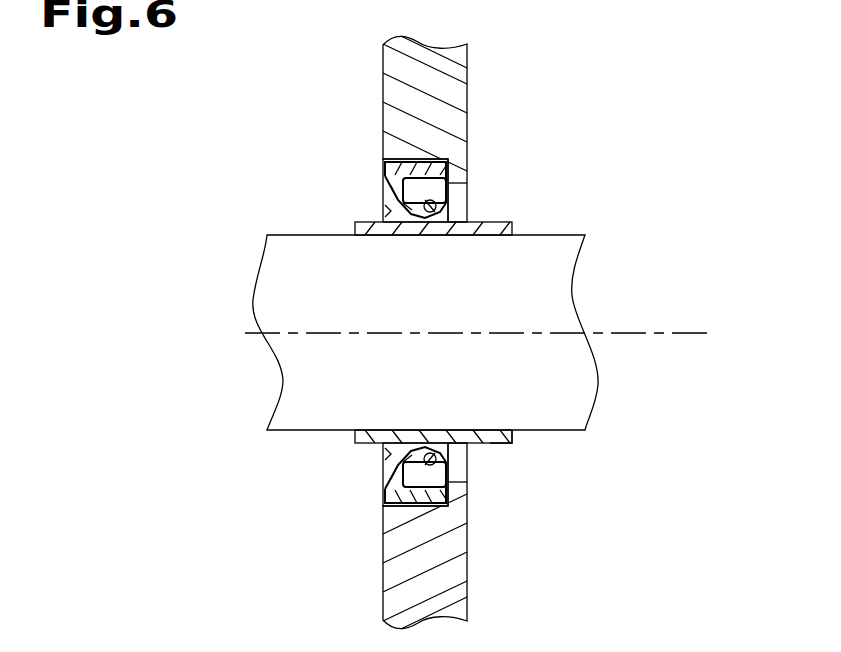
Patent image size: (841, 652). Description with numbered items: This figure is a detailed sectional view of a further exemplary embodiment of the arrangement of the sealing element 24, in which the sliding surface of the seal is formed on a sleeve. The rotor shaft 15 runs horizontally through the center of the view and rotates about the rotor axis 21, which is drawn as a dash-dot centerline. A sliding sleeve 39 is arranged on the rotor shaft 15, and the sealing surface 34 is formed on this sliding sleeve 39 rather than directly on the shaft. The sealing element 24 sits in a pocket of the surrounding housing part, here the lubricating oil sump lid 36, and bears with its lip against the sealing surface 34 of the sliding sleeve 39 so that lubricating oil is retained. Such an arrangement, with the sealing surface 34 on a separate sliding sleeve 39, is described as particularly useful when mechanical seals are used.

The rotor shaft 15 is at (577, 392).
The rotor axis 21 is at (677, 332).
The sealing element 24 is at (388, 478).
The sealing surface 34 is at (363, 446).
The lubricating oil sump lid 36 is at (393, 557).
The sliding sleeve 39 is at (503, 444).